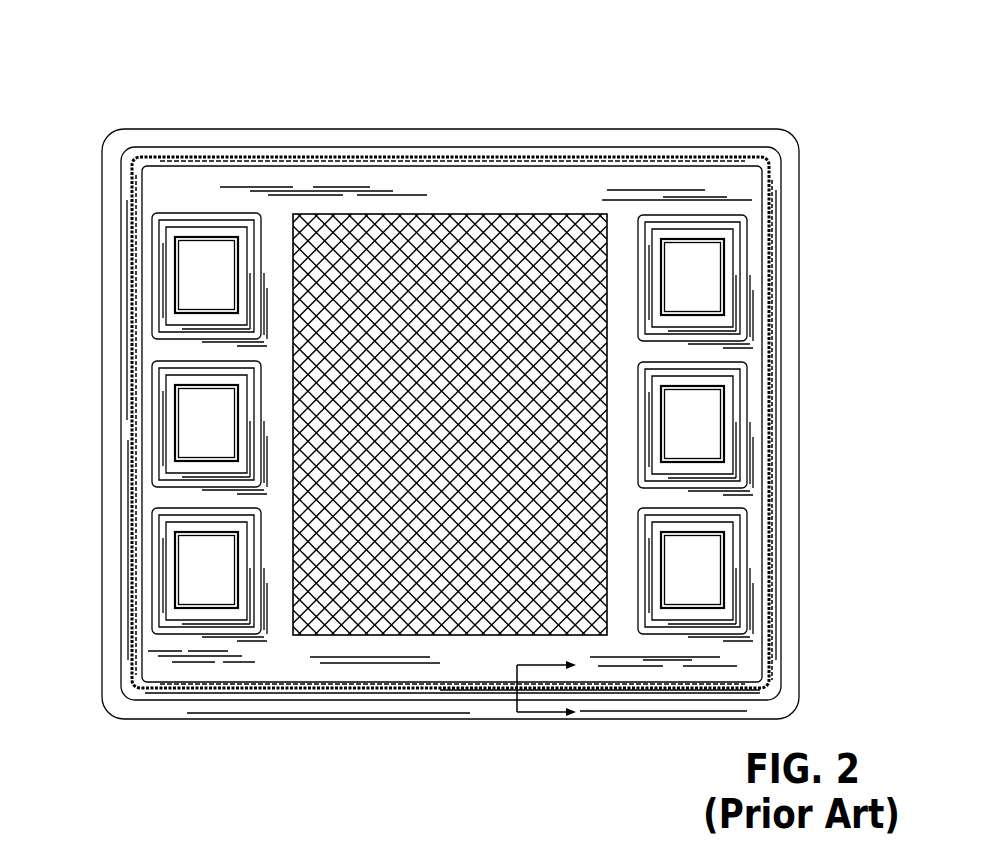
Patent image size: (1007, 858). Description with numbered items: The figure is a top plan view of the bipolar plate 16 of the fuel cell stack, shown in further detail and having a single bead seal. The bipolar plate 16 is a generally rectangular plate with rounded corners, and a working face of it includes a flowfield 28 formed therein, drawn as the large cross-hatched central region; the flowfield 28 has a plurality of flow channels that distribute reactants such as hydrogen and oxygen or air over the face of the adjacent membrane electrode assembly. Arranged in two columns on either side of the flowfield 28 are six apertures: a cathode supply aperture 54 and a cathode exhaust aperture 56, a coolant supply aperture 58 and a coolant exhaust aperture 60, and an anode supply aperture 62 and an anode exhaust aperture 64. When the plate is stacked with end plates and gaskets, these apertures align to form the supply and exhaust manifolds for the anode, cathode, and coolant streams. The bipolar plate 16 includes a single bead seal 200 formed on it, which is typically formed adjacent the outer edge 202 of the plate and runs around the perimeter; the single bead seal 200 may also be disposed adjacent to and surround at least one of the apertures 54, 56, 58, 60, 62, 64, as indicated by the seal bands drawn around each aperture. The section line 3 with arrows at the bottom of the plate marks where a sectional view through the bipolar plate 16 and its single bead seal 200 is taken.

The bipolar plate 16 is at (488, 389).
The single bead seal 200 is at (773, 178).
The outer edge 202 is at (247, 720).
The cathode supply aperture 54 is at (198, 260).
The coolant exhaust aperture 60 is at (200, 407).
The anode exhaust aperture 64 is at (198, 553).
The anode supply aperture 62 is at (705, 270).
The coolant supply aperture 58 is at (703, 413).
The cathode exhaust aperture 56 is at (703, 561).
The flowfield 28 is at (460, 584).
The section line 3 is at (531, 694).